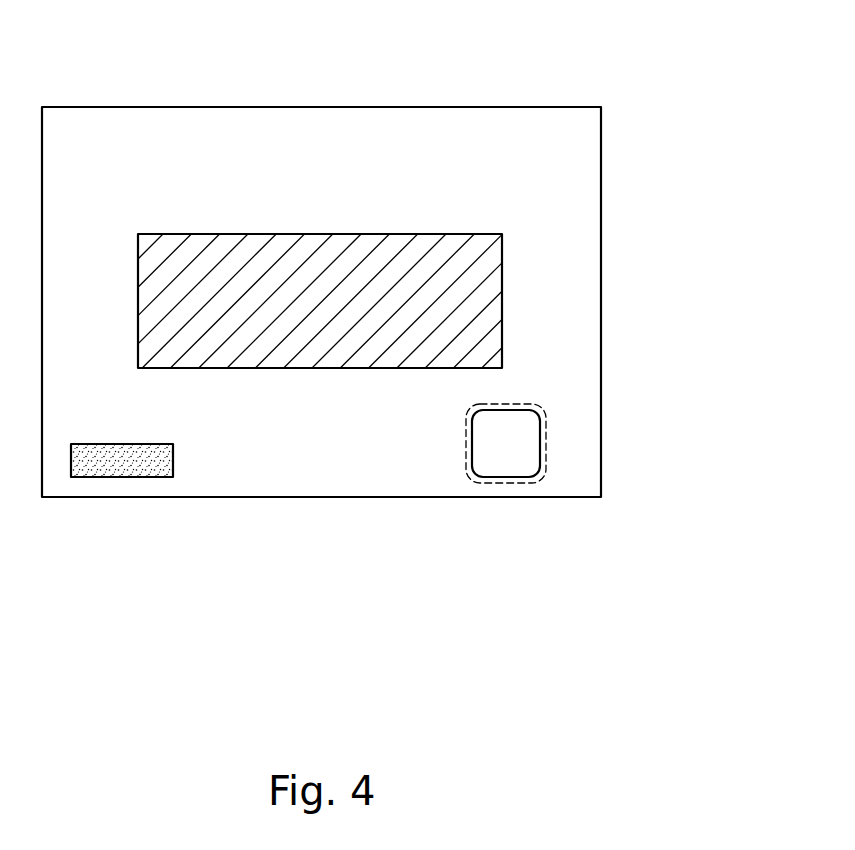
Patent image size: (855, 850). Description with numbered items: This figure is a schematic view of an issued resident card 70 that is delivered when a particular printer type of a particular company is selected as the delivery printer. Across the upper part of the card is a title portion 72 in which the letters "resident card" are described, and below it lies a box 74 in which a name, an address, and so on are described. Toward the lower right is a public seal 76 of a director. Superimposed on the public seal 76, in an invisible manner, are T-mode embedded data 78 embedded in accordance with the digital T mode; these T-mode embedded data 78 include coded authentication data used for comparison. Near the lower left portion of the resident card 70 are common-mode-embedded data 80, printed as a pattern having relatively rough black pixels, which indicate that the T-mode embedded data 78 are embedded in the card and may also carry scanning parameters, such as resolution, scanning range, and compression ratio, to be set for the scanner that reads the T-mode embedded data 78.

The resident card 70 is at (162, 106).
The title portion 72 is at (409, 139).
The box 74 is at (504, 273).
The public seal 76 is at (537, 437).
The T-mode embedded data 78 is at (525, 484).
The common-mode-embedded data 80 is at (121, 478).